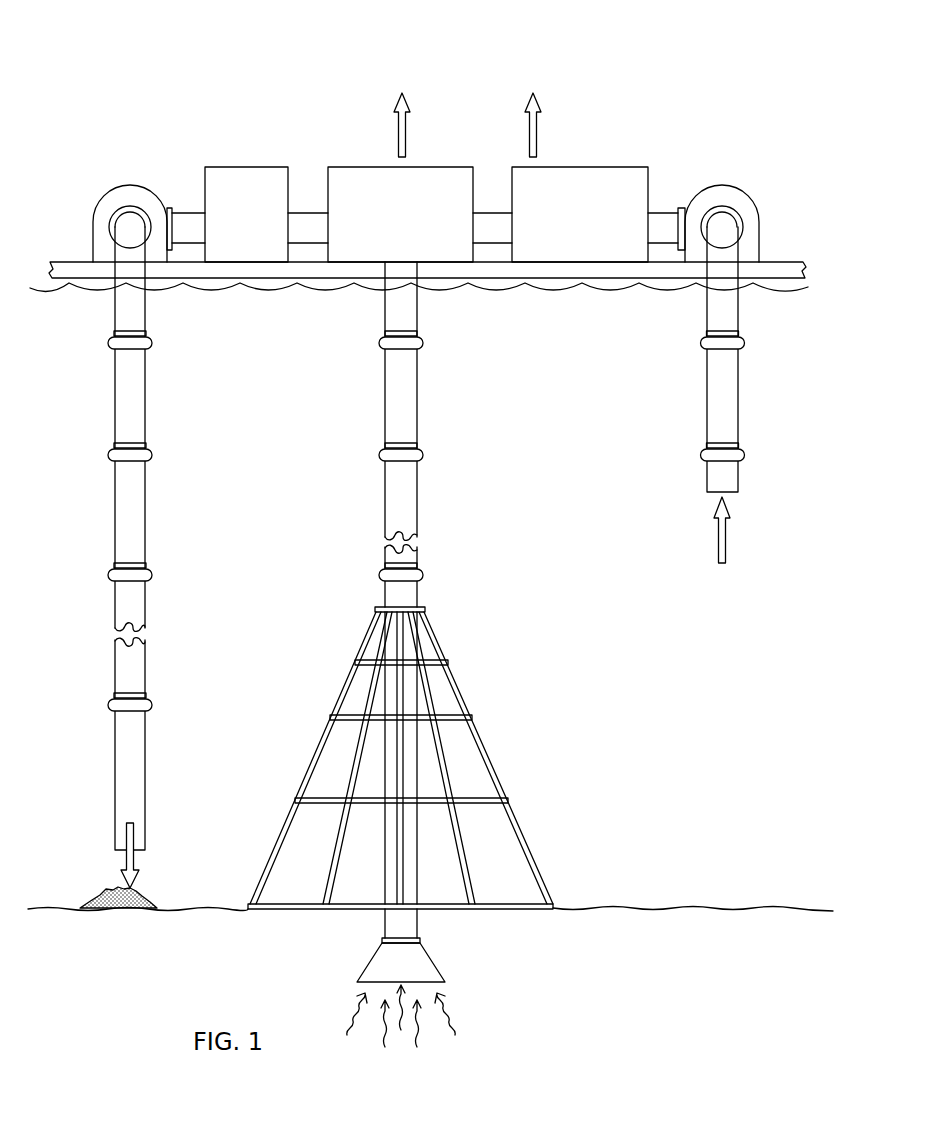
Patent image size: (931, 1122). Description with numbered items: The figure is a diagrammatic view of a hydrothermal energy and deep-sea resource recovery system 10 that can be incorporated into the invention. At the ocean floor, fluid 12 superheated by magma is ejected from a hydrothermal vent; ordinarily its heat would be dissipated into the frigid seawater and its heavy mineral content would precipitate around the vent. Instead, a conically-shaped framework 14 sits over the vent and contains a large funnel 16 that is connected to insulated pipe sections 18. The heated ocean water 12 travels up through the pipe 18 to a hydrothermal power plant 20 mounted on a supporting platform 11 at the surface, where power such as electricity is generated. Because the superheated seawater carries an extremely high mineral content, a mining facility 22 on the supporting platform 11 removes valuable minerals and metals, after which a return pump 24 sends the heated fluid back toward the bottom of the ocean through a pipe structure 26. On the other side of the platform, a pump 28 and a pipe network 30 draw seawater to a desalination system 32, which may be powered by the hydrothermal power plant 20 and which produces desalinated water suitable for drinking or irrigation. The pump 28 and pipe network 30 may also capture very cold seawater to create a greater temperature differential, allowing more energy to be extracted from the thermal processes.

The hydrothermal energy and deep-sea resource recovery system 10 is at (165, 112).
The supporting platform 11 is at (64, 266).
The fluid 12 is at (447, 1018).
The conically-shaped framework 14 is at (503, 785).
The funnel 16 is at (372, 965).
The insulated pipe sections 18 is at (413, 510).
The hydrothermal power plant 20 is at (368, 170).
The mining facility 22 is at (262, 168).
The return pump 24 is at (107, 202).
The pipe structure 26 is at (140, 400).
The pump 28 is at (742, 217).
The pipe network 30 is at (733, 405).
The desalination system 32 is at (553, 170).